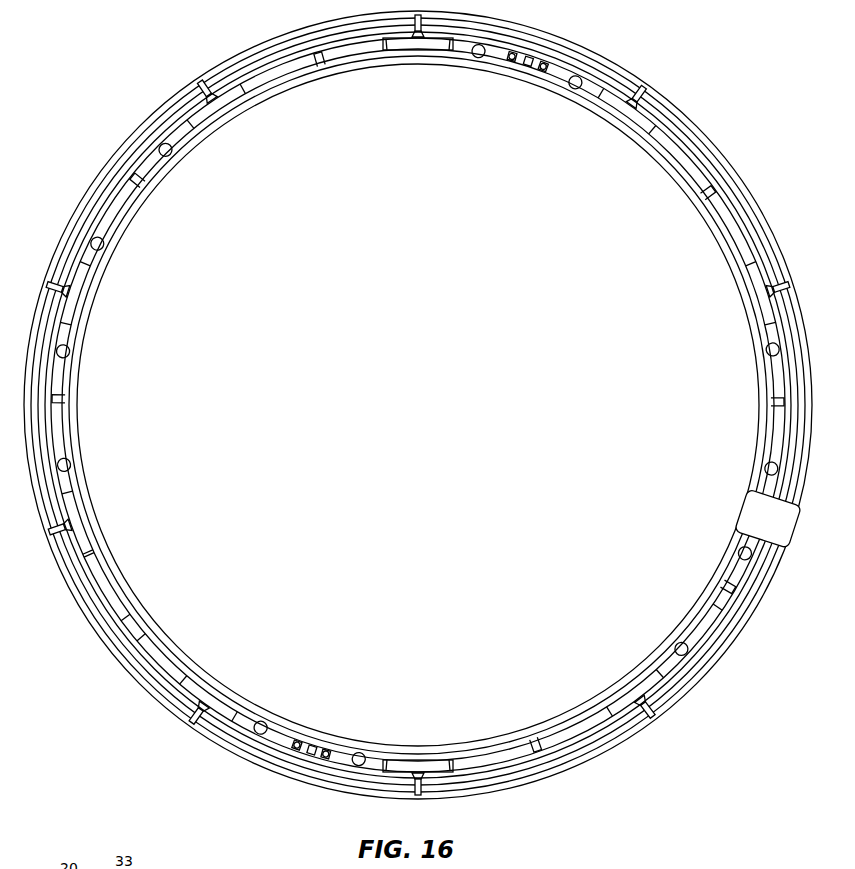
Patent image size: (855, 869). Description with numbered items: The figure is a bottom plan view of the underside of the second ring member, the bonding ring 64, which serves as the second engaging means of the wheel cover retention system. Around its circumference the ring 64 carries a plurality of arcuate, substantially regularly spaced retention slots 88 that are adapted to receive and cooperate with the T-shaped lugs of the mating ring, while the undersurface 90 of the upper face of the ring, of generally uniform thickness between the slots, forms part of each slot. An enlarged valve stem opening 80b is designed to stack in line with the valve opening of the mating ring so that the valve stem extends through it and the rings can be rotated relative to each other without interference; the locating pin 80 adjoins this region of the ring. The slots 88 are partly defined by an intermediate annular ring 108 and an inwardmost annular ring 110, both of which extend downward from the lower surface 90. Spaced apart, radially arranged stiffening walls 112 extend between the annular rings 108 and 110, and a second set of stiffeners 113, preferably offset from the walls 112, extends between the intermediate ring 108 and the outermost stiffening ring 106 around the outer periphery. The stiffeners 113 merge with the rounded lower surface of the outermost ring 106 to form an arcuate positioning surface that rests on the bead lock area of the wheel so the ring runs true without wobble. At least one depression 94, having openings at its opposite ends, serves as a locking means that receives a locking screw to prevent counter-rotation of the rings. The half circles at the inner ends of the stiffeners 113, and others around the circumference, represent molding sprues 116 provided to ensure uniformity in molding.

The ring 64 is at (152, 109).
The locating pin 80 is at (638, 92).
The enlarged valve stem opening 80b is at (784, 529).
The retention slots 88 is at (400, 48).
The lower surface 90 is at (698, 626).
The depression 94 is at (500, 72).
The outermost stiffening ring 106 is at (703, 122).
The intermediate annular ring 108 is at (605, 732).
The inwardmost annular ring 110 is at (557, 727).
The stiffening walls 112 is at (322, 68).
The stiffeners 113 is at (195, 78).
The molding sprues 116 is at (470, 58).